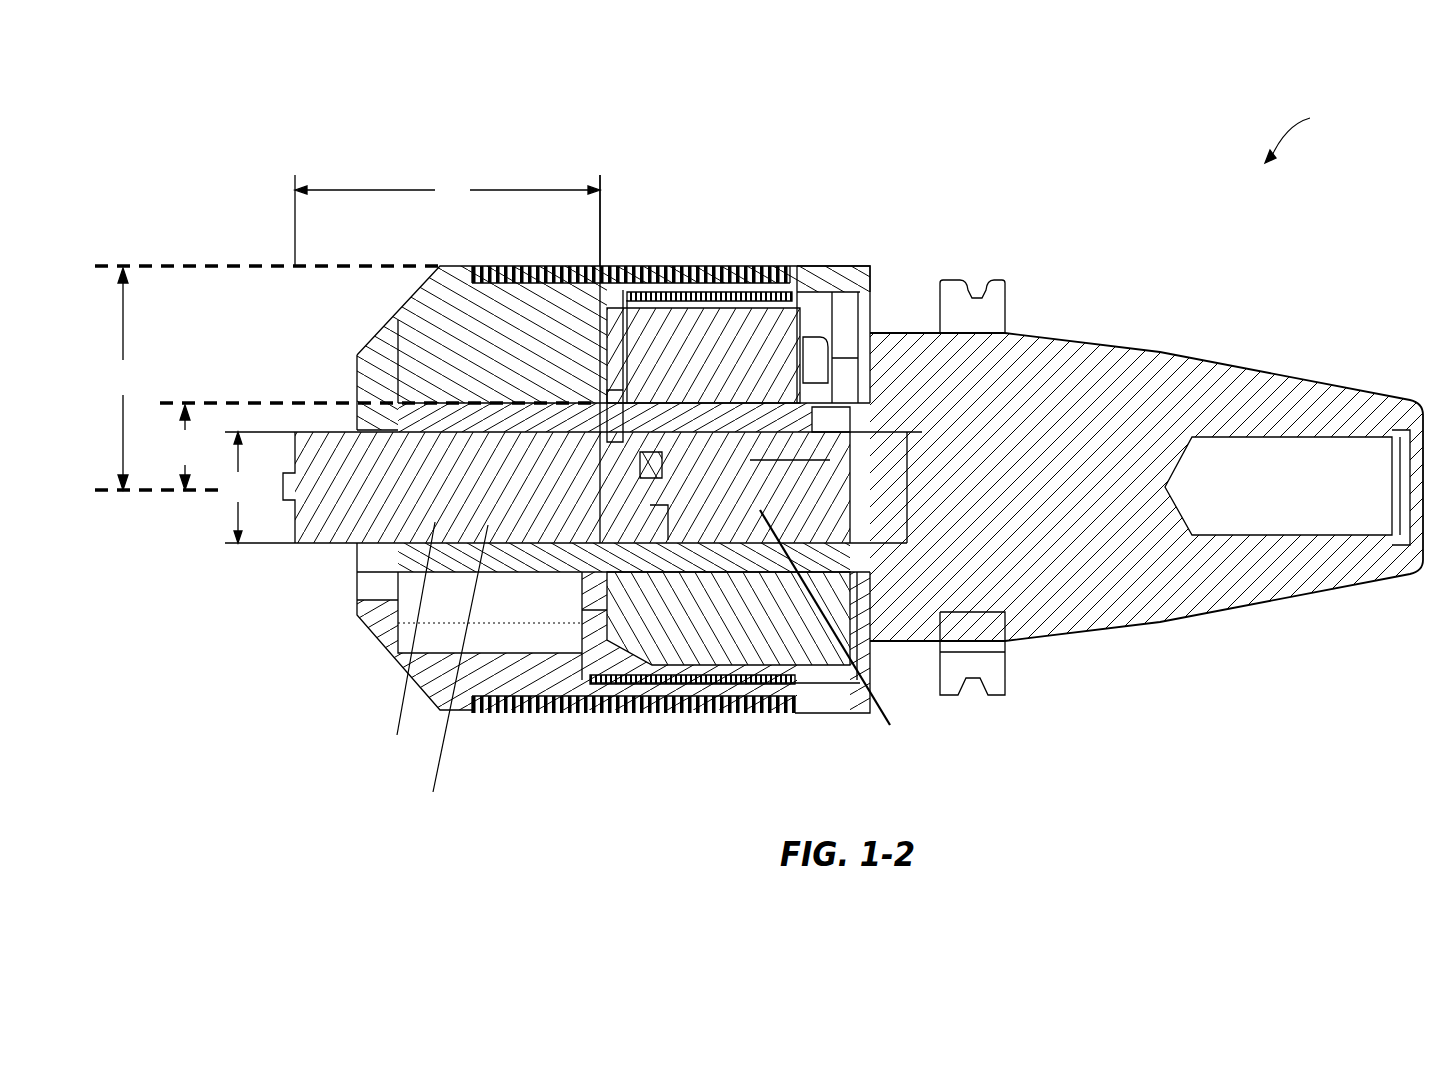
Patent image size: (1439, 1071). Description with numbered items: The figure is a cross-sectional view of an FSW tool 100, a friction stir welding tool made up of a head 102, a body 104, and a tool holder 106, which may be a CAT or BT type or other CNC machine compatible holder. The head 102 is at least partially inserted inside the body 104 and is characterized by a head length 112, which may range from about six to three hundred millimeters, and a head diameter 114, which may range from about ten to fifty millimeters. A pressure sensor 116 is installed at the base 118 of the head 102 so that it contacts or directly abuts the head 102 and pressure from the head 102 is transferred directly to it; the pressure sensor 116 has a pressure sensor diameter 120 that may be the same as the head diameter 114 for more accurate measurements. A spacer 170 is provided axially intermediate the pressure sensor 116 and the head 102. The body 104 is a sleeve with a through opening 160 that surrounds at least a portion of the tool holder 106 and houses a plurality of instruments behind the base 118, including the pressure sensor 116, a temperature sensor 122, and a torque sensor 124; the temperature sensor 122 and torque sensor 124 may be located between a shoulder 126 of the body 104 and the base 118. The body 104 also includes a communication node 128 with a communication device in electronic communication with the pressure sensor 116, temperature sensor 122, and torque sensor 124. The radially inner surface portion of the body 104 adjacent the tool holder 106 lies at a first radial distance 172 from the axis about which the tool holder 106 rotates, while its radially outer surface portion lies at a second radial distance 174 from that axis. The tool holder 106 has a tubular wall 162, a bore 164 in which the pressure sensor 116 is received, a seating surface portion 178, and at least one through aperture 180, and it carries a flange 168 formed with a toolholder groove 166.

The FSW tool 100 is at (1306, 135).
The head 102 is at (312, 447).
The body 104 is at (432, 300).
The tool holder 106 is at (1082, 597).
The head length 112 is at (447, 220).
The head diameter 114 is at (241, 487).
The pressure sensor 116 is at (715, 470).
The base 118 is at (660, 470).
The pressure sensor diameter 120 is at (886, 487).
The temperature sensor 122 is at (492, 612).
The torque sensor 124 is at (785, 330).
The shoulder 126 is at (346, 593).
The communication node 128 is at (748, 605).
The through opening 160 is at (530, 385).
The tubular wall 162 is at (443, 683).
The bore 164 is at (381, 655).
The toolholder groove 166 is at (966, 272).
The flange 168 is at (1008, 300).
The spacer 170 is at (632, 505).
The first radial distance 172 is at (186, 447).
The second radial distance 174 is at (123, 379).
The seating surface portion 178 is at (853, 634).
The through aperture 180 is at (840, 422).